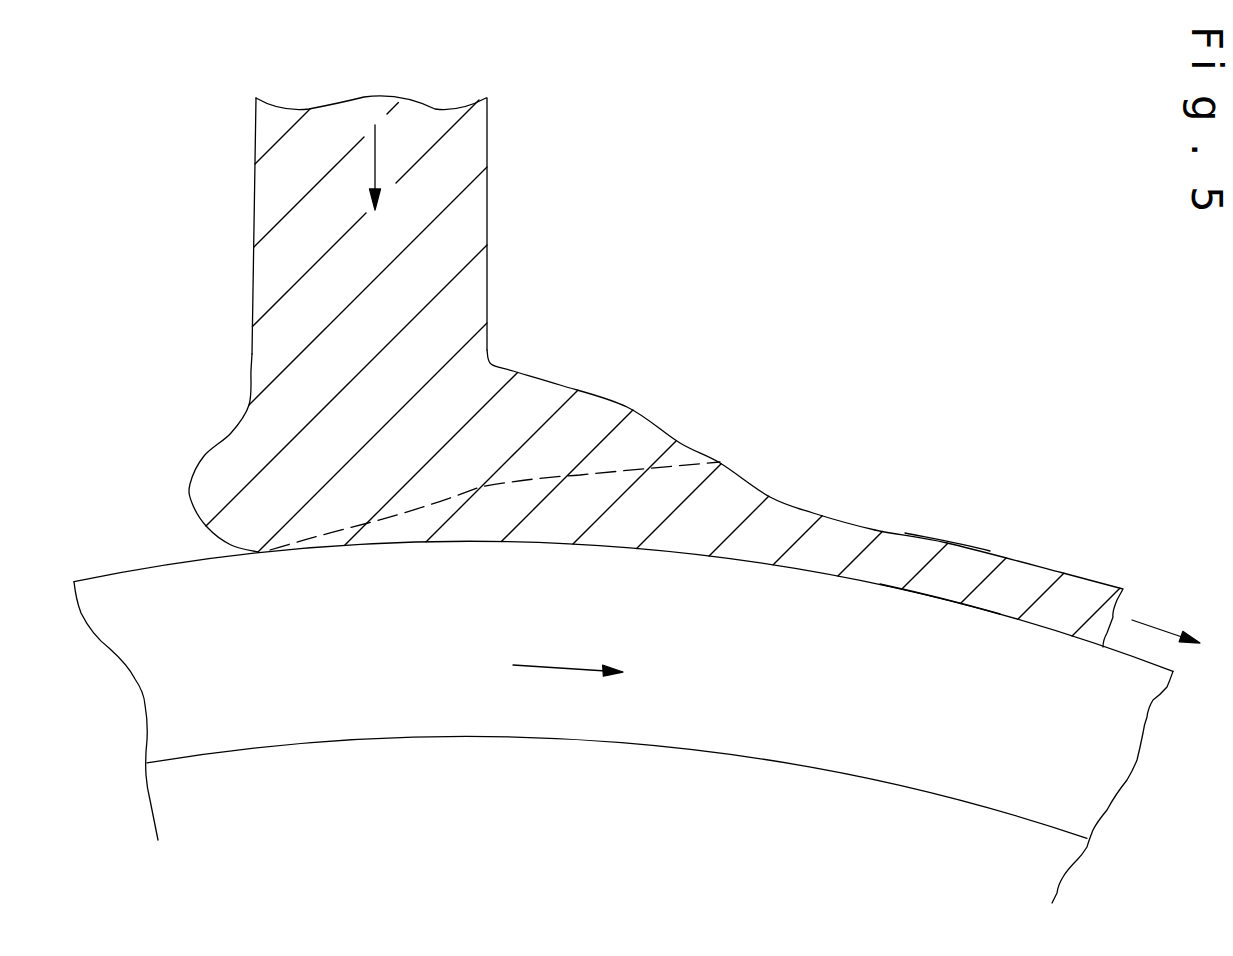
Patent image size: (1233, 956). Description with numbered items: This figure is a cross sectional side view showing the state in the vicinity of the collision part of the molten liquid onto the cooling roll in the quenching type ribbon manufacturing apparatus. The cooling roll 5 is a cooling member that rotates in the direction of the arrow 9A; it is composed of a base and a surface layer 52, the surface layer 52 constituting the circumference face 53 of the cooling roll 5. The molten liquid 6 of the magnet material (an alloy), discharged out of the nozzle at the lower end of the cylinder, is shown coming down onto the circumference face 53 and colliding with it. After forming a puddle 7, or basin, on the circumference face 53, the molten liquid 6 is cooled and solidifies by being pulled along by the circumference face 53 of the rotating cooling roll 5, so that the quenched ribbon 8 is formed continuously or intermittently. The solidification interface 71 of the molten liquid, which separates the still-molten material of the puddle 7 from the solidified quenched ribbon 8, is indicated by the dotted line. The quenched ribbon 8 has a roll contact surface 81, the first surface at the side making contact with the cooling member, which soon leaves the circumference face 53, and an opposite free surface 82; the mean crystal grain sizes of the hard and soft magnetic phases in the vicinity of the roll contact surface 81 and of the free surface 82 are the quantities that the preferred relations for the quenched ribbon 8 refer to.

The cooling roll 5 is at (128, 718).
The surface layer 52 is at (376, 706).
The circumference face 53 is at (157, 565).
The molten liquid 6 is at (290, 211).
The puddle 7 is at (545, 412).
The solidification interface 71 is at (603, 467).
The quenched ribbon 8 is at (1067, 595).
The roll contact surface 81 is at (938, 600).
The free surface 82 is at (940, 540).
The arrow 9A is at (568, 655).